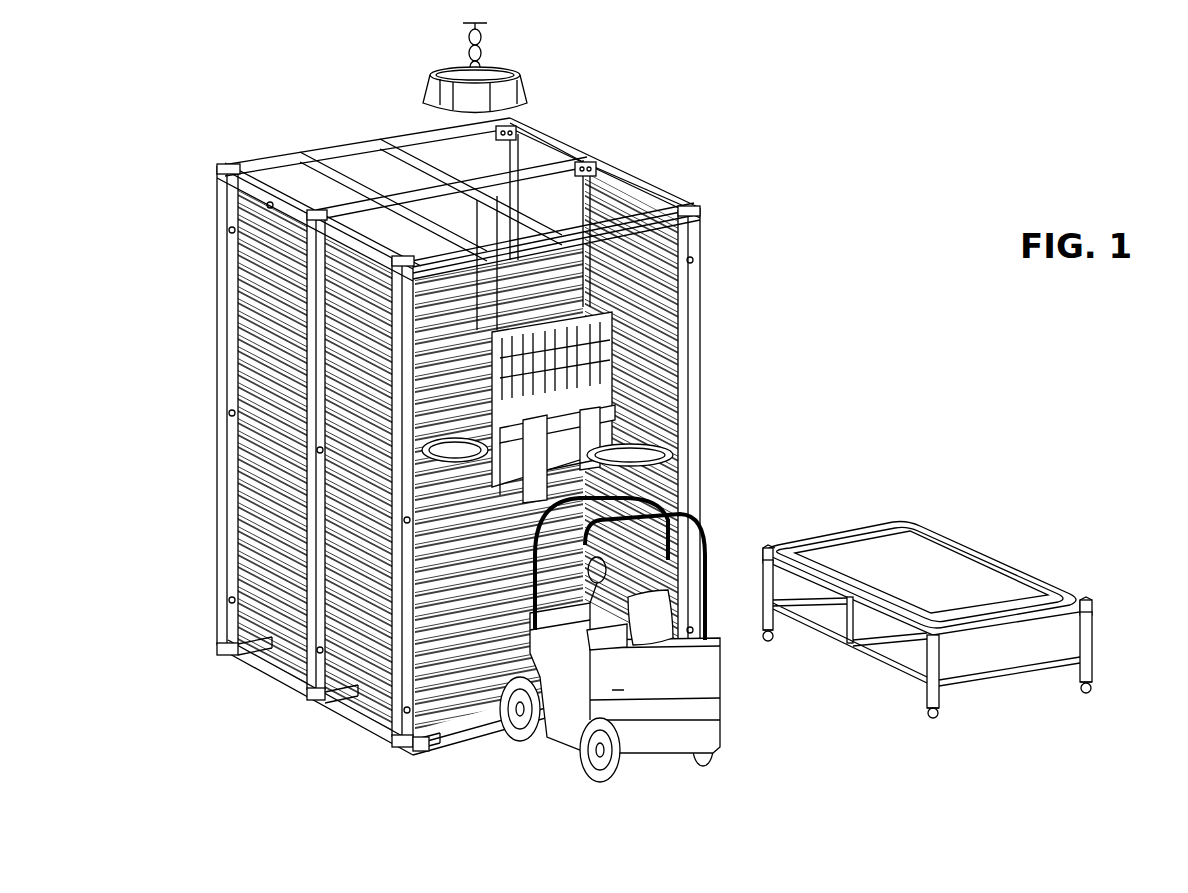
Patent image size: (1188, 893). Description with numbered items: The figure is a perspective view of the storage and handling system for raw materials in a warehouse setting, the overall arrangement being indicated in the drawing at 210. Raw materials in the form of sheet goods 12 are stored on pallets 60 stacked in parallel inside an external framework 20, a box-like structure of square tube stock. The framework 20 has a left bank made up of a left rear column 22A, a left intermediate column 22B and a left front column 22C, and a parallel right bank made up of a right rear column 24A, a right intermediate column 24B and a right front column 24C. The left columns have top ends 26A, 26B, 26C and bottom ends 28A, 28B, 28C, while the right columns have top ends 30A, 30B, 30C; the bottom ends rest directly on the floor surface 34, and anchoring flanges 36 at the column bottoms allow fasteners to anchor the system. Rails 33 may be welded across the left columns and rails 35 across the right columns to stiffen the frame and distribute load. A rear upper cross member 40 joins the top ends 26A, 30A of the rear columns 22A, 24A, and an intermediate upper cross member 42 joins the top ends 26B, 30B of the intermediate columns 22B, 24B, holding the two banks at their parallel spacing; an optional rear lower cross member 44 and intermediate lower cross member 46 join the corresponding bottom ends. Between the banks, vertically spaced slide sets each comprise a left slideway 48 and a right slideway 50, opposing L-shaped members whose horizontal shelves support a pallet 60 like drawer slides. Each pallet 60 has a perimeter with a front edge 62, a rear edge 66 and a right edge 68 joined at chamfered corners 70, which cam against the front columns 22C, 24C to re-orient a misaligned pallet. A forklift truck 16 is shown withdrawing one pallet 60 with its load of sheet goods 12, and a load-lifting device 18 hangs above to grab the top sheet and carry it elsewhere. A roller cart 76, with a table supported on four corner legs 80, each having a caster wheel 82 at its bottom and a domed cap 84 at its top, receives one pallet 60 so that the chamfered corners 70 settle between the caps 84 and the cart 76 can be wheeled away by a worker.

The sheet goods 12 is at (635, 428).
The forklift truck 16 is at (724, 712).
The load-lifting device 18 is at (528, 92).
The external framework 20 is at (704, 205).
The left rear column 22A is at (217, 510).
The left intermediate column 22B is at (307, 632).
The left front column 22C is at (397, 683).
The right rear column 24A is at (532, 150).
The right intermediate column 24B is at (622, 188).
The right front column 24C is at (697, 380).
The top end of left rear column 26A is at (222, 166).
The top end of left intermediate column 26B is at (313, 210).
The top end of left front column 26C is at (400, 258).
The bottom end of left rear column 28A is at (222, 654).
The bottom end of left intermediate column 28B is at (313, 700).
The bottom end of left front column 28C is at (399, 748).
The top end of right rear column 30A is at (512, 122).
The top end of right intermediate column 30B is at (590, 165).
The top end of right front column 30C is at (692, 210).
The rails 33 is at (268, 206).
The floor surface 34 is at (930, 628).
The rails 35 is at (584, 160).
The anchoring flanges 36 is at (428, 740).
The rear upper cross member 40 is at (378, 142).
The intermediate upper cross member 42 is at (448, 192).
The rear lower cross member 44 is at (273, 650).
The intermediate lower cross member 46 is at (380, 693).
The left slideway 48 is at (424, 714).
The right slideway 50 is at (624, 206).
The pallet 60 is at (1034, 567).
The front edge 62 is at (895, 615).
The rear edge 66 is at (967, 537).
The right edge 68 is at (993, 620).
The chamfered corners 70 is at (780, 537).
The roller cart 76 is at (1094, 643).
The corner legs 80 is at (762, 590).
The caster wheel 82 is at (772, 639).
The domed cap 84 is at (770, 550).
The system 210 is at (778, 340).